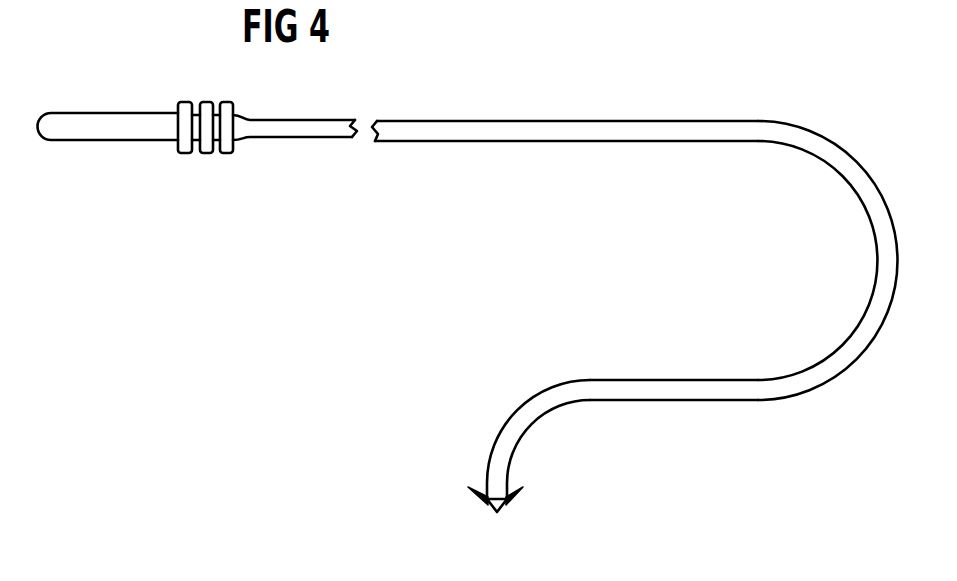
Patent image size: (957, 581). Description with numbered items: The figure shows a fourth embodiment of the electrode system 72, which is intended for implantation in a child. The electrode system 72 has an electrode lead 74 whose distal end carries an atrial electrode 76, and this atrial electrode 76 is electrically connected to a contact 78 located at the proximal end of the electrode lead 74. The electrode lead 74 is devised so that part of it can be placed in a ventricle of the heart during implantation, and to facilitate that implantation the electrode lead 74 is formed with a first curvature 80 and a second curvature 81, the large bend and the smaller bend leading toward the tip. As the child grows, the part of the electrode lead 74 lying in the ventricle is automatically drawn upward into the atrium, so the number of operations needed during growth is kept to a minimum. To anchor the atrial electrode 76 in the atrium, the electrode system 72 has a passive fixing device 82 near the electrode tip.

The electrode system 72 is at (454, 95).
The electrode lead 74 is at (647, 132).
The atrial electrode 76 is at (495, 513).
The contact 78 is at (90, 129).
The first curvature 80 is at (878, 252).
The distal bend 81 is at (523, 412).
The passive fixing device 82 is at (467, 494).